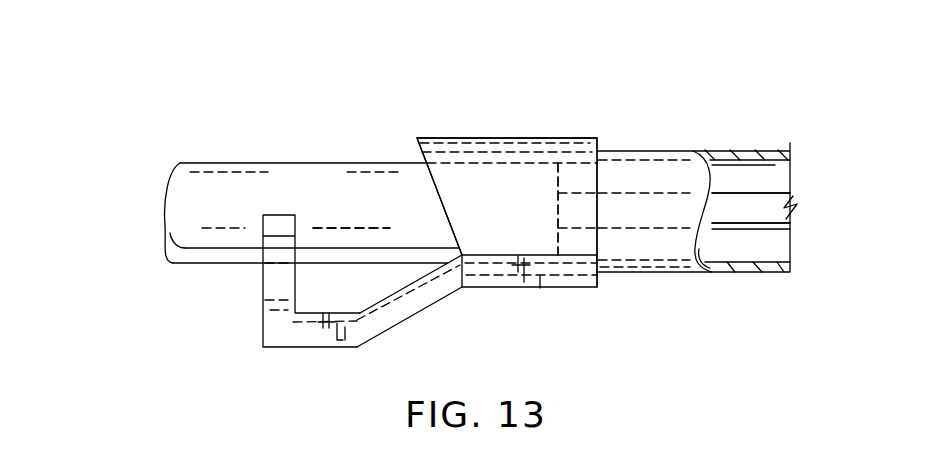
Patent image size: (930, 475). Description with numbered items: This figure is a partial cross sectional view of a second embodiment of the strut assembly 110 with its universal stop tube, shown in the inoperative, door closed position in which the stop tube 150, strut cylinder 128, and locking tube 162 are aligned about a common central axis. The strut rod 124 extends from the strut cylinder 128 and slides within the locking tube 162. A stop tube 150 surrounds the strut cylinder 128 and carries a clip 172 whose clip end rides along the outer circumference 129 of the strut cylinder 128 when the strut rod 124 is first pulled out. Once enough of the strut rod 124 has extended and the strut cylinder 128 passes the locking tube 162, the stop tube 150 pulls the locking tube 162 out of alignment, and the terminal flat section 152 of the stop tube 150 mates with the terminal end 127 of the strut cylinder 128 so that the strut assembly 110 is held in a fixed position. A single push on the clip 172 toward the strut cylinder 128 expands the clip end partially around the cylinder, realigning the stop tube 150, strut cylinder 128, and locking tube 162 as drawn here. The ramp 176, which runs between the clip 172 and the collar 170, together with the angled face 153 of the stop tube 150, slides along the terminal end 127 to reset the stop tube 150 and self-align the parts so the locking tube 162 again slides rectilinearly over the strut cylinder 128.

The strut assembly 110 is at (199, 60).
The strut rod 124 is at (757, 210).
The terminal end 127 is at (576, 173).
The strut cylinder 128 is at (202, 197).
The outer circumference 129 is at (323, 196).
The stop tube 150 is at (509, 137).
The terminal flat section 152 is at (415, 138).
The angled face 153 is at (450, 223).
The locking tube 162 is at (637, 180).
The collar 170 is at (532, 228).
The clip 172 is at (262, 299).
The ramp 176 is at (418, 297).